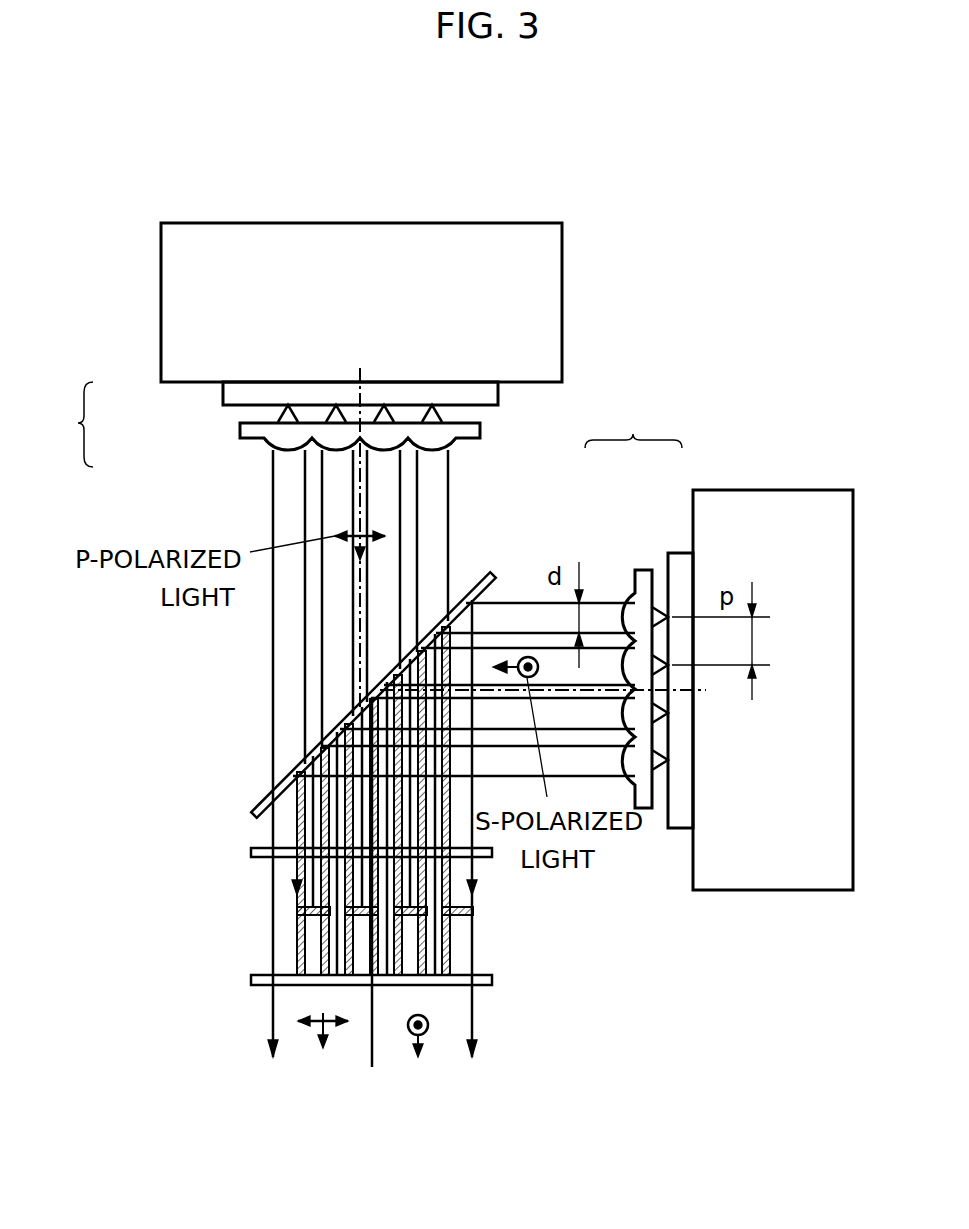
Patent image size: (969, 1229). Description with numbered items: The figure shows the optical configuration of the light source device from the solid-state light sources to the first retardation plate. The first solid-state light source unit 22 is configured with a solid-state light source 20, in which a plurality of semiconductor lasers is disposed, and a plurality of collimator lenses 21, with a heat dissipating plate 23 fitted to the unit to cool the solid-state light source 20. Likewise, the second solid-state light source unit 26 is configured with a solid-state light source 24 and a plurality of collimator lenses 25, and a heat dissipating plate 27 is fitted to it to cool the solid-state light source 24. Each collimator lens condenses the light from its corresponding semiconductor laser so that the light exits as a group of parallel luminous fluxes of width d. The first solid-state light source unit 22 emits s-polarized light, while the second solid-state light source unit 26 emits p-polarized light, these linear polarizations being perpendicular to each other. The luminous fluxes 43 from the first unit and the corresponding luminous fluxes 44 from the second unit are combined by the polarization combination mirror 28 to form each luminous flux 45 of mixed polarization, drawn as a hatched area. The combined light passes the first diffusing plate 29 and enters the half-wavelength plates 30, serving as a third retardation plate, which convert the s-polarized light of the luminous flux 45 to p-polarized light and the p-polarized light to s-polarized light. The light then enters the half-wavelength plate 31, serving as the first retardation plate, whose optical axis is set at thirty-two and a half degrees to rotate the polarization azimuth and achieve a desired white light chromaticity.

The solid-state light source 20 is at (680, 553).
The collimator lenses 21 is at (643, 570).
The first solid-state light source unit 22 is at (639, 616).
The heat dissipating plate 23 is at (820, 490).
The solid-state light source 24 is at (223, 403).
The collimator lenses 25 is at (240, 430).
The second solid-state light source unit 26 is at (65, 424).
The heat dissipating plate 27 is at (562, 280).
The polarization combination mirror 28 is at (250, 812).
The first diffusing plate 29 is at (251, 850).
The half-wavelength plates 30 is at (470, 910).
The half-wavelength plate 31 is at (251, 979).
The luminous fluxes 43 is at (612, 763).
The luminous fluxes 44 is at (285, 688).
The luminous flux 45 is at (297, 935).